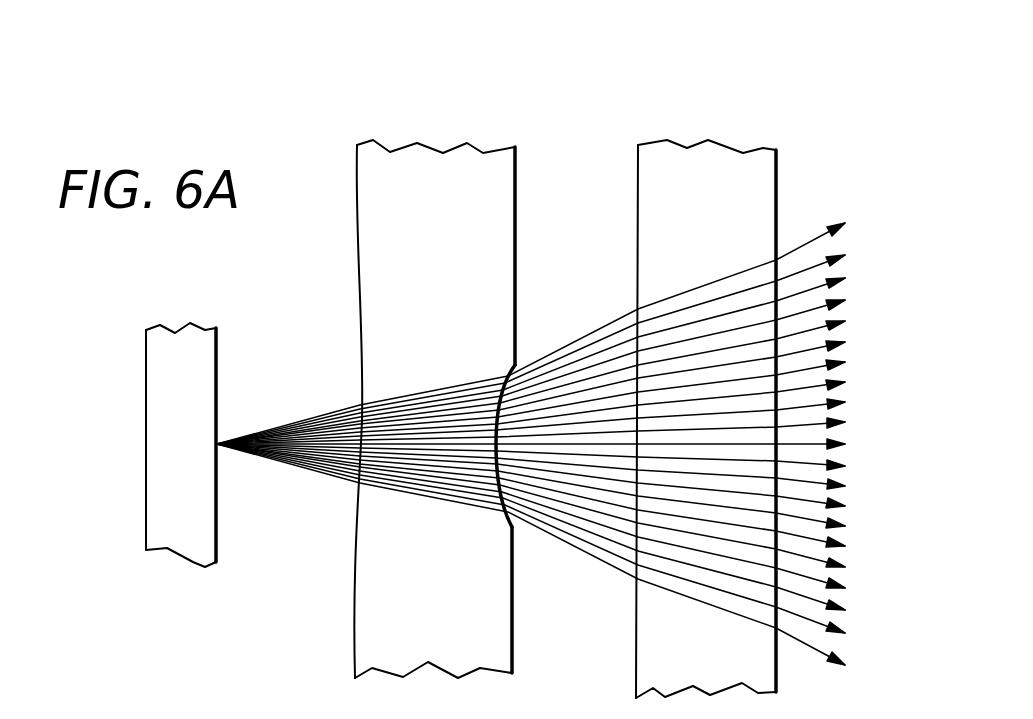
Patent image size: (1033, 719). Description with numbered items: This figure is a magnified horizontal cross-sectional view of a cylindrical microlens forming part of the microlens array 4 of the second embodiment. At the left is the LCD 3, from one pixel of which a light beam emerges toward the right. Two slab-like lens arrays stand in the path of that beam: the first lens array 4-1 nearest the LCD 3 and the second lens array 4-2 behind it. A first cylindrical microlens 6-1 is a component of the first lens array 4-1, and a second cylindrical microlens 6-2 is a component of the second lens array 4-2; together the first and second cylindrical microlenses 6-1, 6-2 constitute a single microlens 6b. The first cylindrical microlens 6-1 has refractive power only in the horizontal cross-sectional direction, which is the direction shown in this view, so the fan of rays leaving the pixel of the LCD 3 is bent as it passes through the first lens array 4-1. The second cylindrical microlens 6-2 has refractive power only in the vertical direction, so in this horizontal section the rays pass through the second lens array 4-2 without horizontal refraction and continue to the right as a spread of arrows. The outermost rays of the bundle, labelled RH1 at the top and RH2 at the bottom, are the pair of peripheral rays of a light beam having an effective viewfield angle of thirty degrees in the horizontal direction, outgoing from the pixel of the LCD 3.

The LCD 3 is at (153, 363).
The microlens array 4 is at (815, 75).
The first lens array 4-1 is at (461, 380).
The second lens array 4-2 is at (674, 390).
The first cylindrical microlens 6-1 is at (443, 510).
The second cylindrical microlens 6-2 is at (672, 540).
The microlens 6b is at (630, 622).
The peripheral ray RH1 is at (315, 418).
The peripheral ray RH2 is at (312, 470).